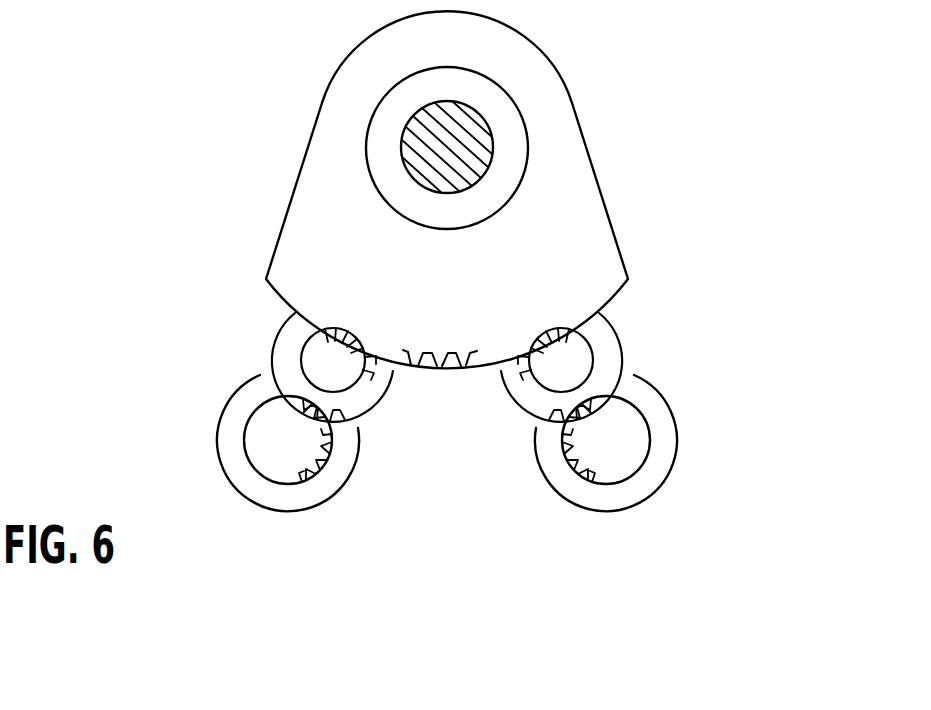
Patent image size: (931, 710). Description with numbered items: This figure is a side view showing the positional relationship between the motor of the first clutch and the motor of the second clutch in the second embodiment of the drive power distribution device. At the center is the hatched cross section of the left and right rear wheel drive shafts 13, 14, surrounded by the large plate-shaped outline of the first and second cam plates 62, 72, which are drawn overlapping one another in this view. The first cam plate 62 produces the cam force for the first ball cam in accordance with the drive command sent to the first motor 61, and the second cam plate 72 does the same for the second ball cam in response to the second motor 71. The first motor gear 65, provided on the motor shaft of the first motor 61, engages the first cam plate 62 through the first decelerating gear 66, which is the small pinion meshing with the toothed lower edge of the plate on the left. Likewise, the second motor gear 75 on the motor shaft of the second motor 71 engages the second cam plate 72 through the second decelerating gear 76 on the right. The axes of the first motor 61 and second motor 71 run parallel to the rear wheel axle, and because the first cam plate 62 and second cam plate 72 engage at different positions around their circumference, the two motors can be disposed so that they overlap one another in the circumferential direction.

The left rear wheel drive shaft 13 is at (356, 148).
The right rear wheel drive shaft 14 is at (433, 133).
The first cam plate 62 is at (490, 189).
The second cam plate 72 is at (592, 160).
The first decelerating gear 66 is at (322, 353).
The second decelerating gear 76 is at (567, 362).
The first motor 61 is at (216, 444).
The second motor 71 is at (678, 437).
The first motor gear 65 is at (287, 470).
The second motor gear 75 is at (596, 476).